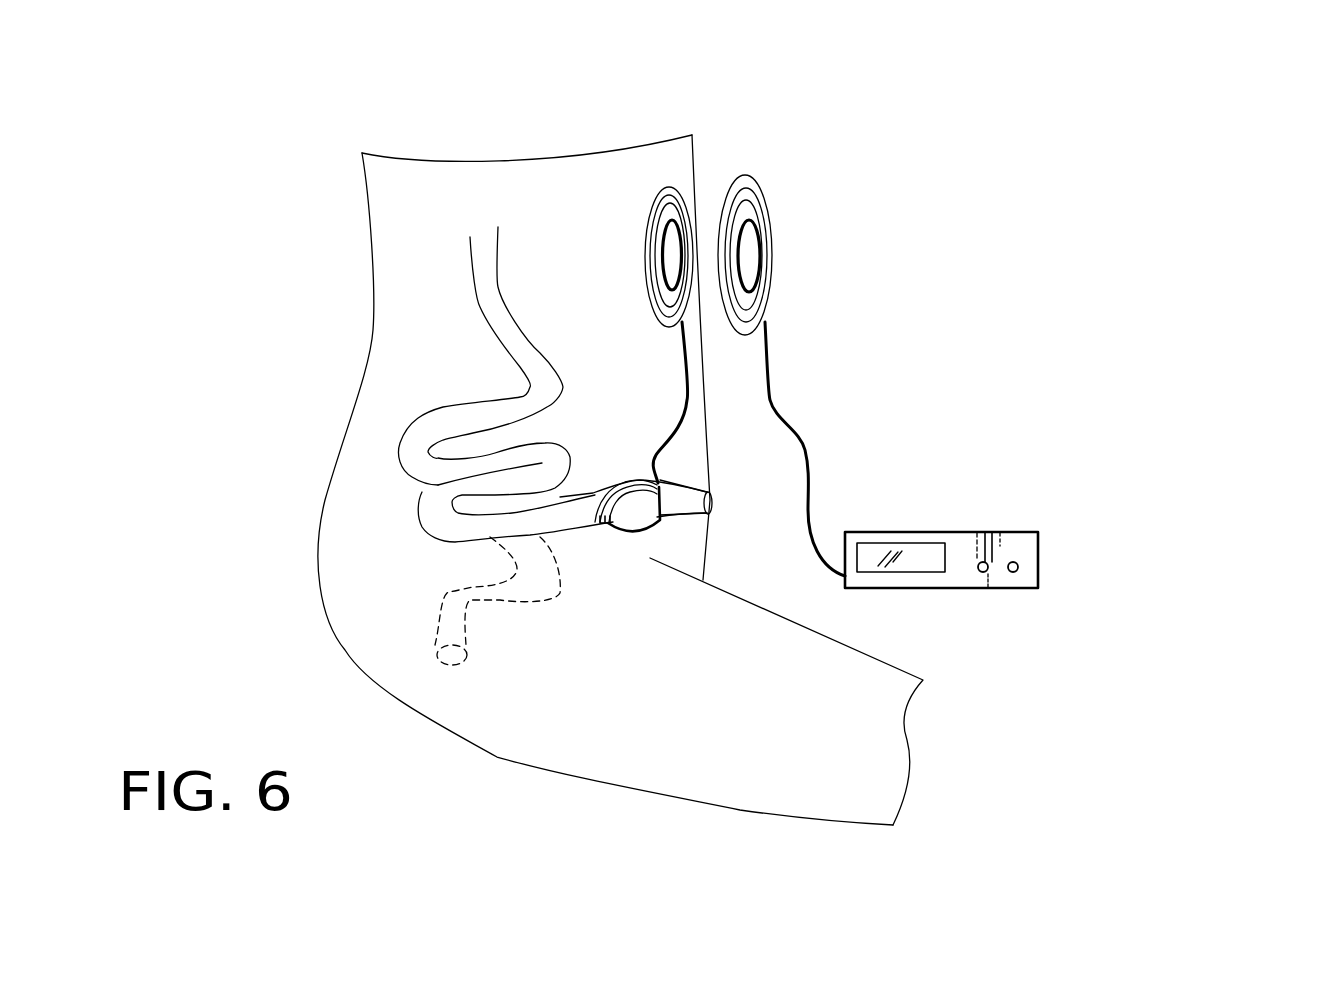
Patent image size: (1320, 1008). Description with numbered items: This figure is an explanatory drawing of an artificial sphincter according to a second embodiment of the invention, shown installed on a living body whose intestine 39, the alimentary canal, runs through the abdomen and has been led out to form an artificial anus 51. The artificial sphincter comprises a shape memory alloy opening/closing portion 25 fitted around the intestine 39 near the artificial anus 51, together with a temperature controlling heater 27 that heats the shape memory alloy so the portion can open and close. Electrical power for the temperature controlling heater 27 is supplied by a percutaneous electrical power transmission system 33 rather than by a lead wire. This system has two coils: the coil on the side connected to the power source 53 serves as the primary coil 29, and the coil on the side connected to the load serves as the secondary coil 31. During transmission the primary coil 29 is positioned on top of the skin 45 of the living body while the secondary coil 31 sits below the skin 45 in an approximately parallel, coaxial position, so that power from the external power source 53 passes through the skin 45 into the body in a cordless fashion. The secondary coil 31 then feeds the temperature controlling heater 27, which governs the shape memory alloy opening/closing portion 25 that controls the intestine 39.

The shape memory alloy opening/closing portion 25 is at (615, 532).
The temperature controlling heater 27 is at (604, 524).
The primary coil 29 is at (762, 210).
The secondary coil 31 is at (660, 220).
The percutaneous electrical power transmission system 33 is at (981, 93).
The intestine 39 is at (428, 520).
The skin of living body 45 is at (710, 457).
The artificial anus 51 is at (713, 503).
The power source 53 is at (887, 590).